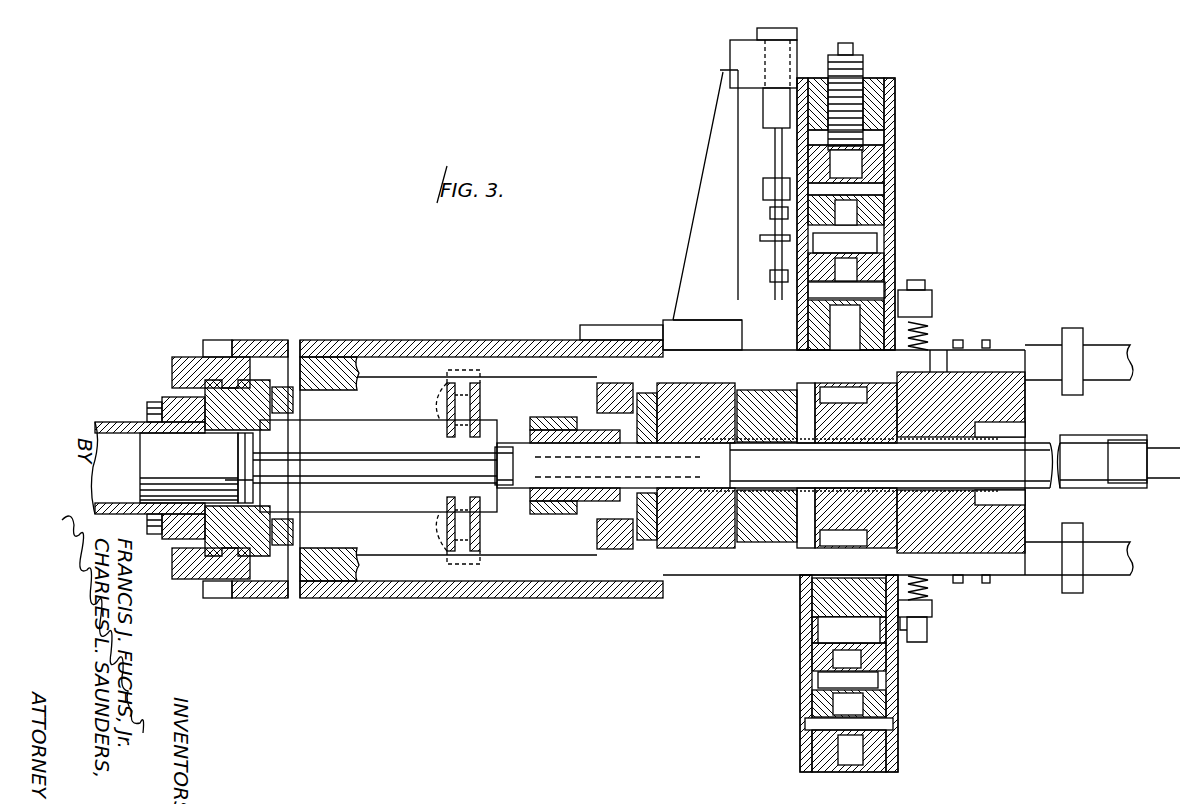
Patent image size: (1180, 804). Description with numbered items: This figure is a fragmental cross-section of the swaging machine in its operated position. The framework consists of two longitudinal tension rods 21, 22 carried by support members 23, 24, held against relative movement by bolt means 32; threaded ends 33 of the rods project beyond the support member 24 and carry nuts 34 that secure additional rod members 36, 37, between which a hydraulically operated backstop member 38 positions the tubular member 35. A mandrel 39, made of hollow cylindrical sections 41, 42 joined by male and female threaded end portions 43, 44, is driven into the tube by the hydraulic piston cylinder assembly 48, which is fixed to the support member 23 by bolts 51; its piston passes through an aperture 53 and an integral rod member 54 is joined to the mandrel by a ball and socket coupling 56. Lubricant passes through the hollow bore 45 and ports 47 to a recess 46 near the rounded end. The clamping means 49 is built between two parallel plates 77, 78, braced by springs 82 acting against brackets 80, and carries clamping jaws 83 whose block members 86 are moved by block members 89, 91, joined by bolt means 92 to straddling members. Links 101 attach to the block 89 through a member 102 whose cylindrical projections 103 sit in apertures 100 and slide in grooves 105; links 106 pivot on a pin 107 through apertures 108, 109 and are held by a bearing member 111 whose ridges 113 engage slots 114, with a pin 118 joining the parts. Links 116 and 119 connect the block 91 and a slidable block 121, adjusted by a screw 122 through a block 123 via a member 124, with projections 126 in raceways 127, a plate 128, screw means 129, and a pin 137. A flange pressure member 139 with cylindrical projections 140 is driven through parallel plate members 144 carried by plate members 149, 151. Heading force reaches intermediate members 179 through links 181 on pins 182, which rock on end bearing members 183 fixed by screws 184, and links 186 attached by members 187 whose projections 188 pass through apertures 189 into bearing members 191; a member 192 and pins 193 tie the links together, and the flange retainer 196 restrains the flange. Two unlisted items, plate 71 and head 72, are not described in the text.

The longitudinal tension rod 21 is at (425, 340).
The longitudinal tension rod 22 is at (422, 598).
The support member 23 is at (245, 358).
The support member 24 is at (1005, 372).
The bolt means 32 is at (960, 340).
The threaded end 33 is at (1083, 548).
The nut 34 is at (1076, 332).
The tubular member 35 is at (1040, 442).
The rod member 36 is at (1125, 350).
The rod member 37 is at (1112, 576).
The backstop member 38 is at (1120, 435).
The mandrel 39 is at (915, 490).
The hollow cylindrical section 41 is at (875, 465).
The hollow cylindrical section 42 is at (540, 440).
The male threaded end portion 43 is at (692, 548).
The female threaded end portion 44 is at (748, 447).
The hollow bore 45 is at (825, 473).
The recess 46 is at (906, 351).
The port 47 is at (905, 470).
The hydraulic piston cylinder assembly 48 is at (123, 430).
The clamping means 49 is at (855, 385).
The bolt 51 is at (153, 402).
The aperture 53 is at (240, 455).
The rod member 54 is at (362, 454).
The ball and socket coupling 56 is at (507, 490).
The mounting plate 71 is at (615, 325).
The lower cylinder head 72 is at (805, 773).
The parallel plate 77 is at (800, 80).
The parallel plate 78 is at (897, 100).
The bracket 80 is at (928, 290).
The spring 82 is at (930, 305).
The clamping jaws 83 is at (845, 404).
The block member 86 is at (700, 390).
The block member 89 is at (882, 576).
The block member 91 is at (790, 360).
The bolt means 92 is at (806, 540).
The aperture 100 is at (845, 576).
The link 101 is at (812, 660).
The member 102 is at (886, 640).
The cylindrical projection 103 is at (812, 627).
The groove 105 is at (812, 648).
The link 106 is at (812, 700).
The pin 107 is at (812, 740).
The aperture 108 is at (850, 773).
The aperture 109 is at (812, 720).
The bearing member 111 is at (880, 773).
The ridge 113 is at (815, 762).
The slot 114 is at (812, 750).
The link 116 is at (883, 285).
The pin 118 is at (818, 680).
The link 119 is at (882, 212).
The slidable block 121 is at (797, 160).
The screw 122 is at (852, 75).
The block 123 is at (870, 85).
The member 124 is at (885, 150).
The projection 126 is at (763, 190).
The raceway 127 is at (882, 198).
The plate 128 is at (795, 135).
The screw means 129 is at (795, 145).
The pin 137 is at (877, 245).
The flange pressure member 139 is at (750, 530).
The cylindrical projection 140 is at (775, 522).
The parallel plate member 144 is at (575, 430).
The plate member 149 is at (380, 345).
The plate member 151 is at (375, 598).
The intermediate member 179 is at (655, 400).
The link 181 is at (413, 388).
The pin 182 is at (300, 360).
The end bearing member 183 is at (290, 345).
The screw 184 is at (290, 415).
The link 186 is at (562, 392).
The member 187 is at (647, 393).
The cylindrical projection 188 is at (620, 395).
The aperture 189 is at (615, 395).
The bearing member 191 is at (660, 443).
The member 192 is at (447, 430).
The pin 193 is at (470, 383).
The flange retainer 196 is at (770, 400).